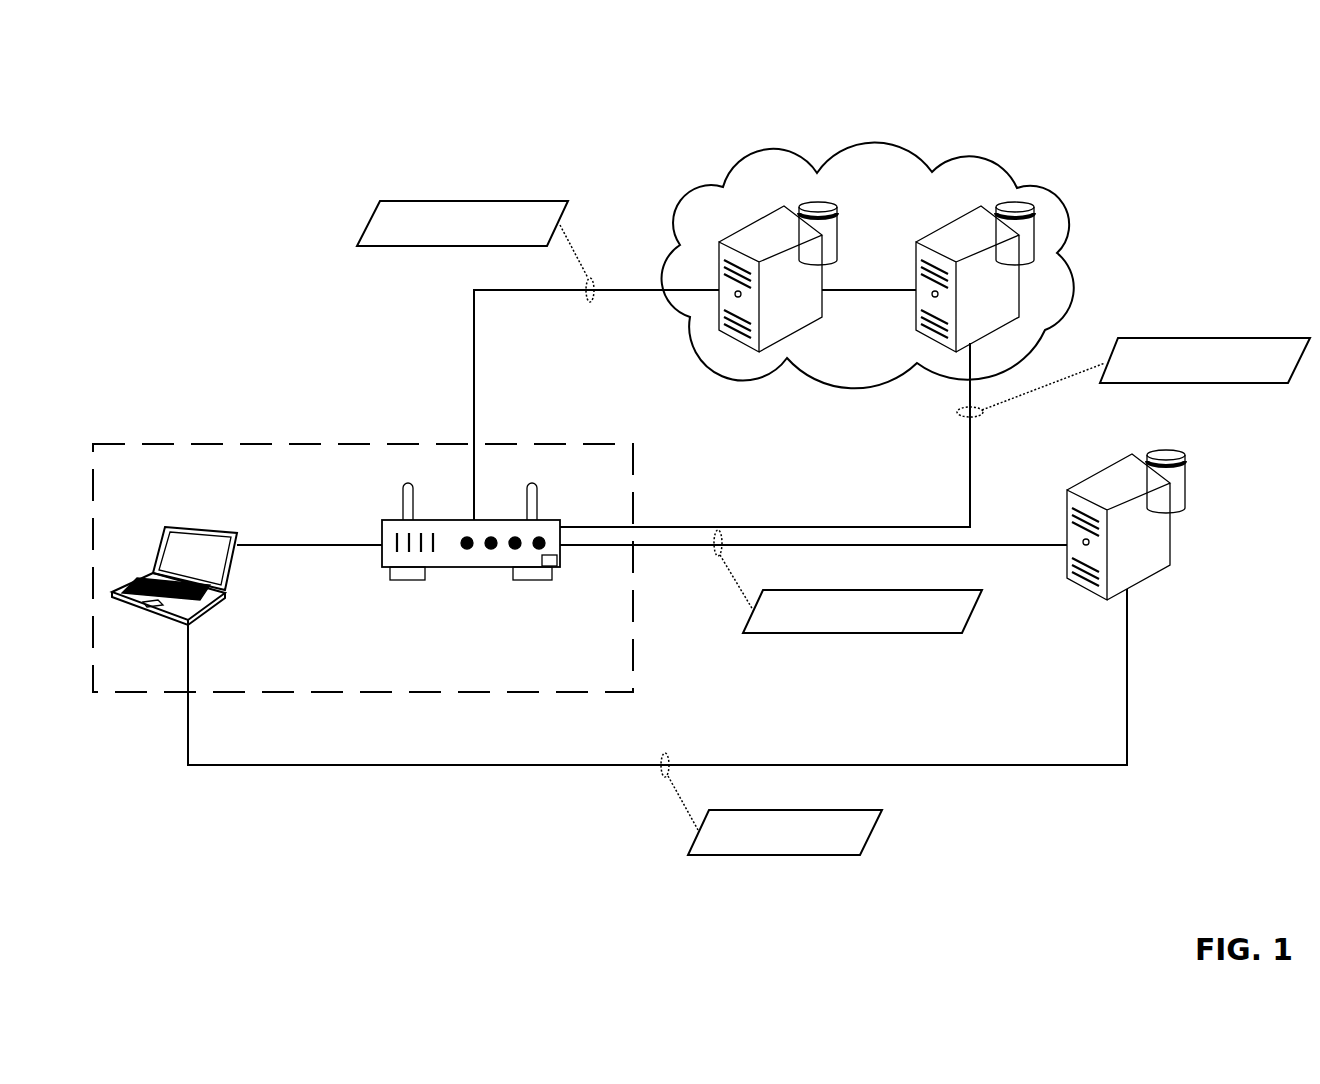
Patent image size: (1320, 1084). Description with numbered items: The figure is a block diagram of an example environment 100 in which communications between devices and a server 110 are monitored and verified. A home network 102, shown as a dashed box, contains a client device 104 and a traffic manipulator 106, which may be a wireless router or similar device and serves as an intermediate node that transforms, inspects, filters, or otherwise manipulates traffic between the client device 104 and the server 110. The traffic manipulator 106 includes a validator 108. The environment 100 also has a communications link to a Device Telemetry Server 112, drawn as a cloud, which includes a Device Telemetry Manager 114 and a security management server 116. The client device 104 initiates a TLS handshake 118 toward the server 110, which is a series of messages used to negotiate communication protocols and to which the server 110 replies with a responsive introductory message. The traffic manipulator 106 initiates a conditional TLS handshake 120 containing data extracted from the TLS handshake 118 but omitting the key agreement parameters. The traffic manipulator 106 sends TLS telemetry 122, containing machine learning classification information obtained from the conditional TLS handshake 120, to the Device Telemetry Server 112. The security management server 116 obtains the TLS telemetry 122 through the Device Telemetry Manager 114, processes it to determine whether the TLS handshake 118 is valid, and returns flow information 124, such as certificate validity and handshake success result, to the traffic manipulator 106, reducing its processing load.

The environment 100 is at (1225, 122).
The home network 102 is at (183, 444).
The client device 104 is at (165, 527).
The traffic manipulator 106 is at (395, 580).
The validator 108 is at (555, 566).
The server 110 is at (1076, 589).
The Device Telemetry Server 112 is at (1047, 193).
The Device Telemetry Manager 114 is at (953, 222).
The security management server 116 is at (817, 322).
The TLS handshake 118 is at (751, 855).
The conditional TLS handshake 120 is at (779, 634).
The TLS telemetry 122 is at (1278, 384).
The flow information 124 is at (422, 200).